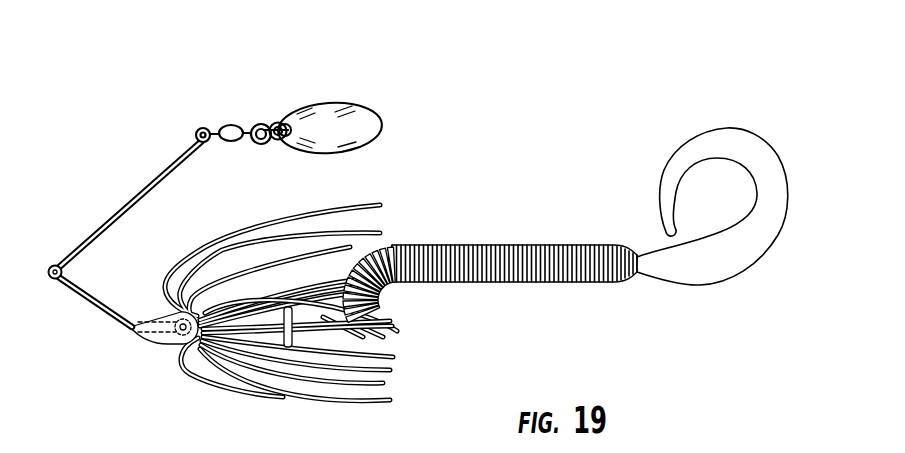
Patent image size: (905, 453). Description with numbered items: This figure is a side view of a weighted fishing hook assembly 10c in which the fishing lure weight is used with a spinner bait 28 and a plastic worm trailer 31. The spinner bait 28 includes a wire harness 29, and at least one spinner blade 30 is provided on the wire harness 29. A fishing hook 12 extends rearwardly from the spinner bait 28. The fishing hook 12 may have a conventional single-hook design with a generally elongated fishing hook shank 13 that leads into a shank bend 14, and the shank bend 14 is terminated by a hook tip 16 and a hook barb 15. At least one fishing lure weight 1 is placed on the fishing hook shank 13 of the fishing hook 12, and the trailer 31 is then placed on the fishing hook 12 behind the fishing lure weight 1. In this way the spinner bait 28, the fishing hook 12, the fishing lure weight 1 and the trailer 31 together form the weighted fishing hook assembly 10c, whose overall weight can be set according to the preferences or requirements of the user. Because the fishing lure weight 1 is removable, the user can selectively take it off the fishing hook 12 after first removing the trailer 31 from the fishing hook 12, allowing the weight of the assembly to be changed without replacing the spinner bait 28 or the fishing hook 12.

The weighted fishing hook assembly 10c is at (290, 68).
The fishing lure weight 1 is at (265, 338).
The fishing hook 12 is at (372, 312).
The fishing hook shank 13 is at (388, 340).
The shank bend 14 is at (352, 250).
The hook barb 15 is at (338, 254).
The hook tip 16 is at (290, 243).
The spinner bait 28 is at (167, 344).
The wire harness 29 is at (129, 200).
The spinner blade 30 is at (347, 113).
The trailer 31 is at (570, 245).